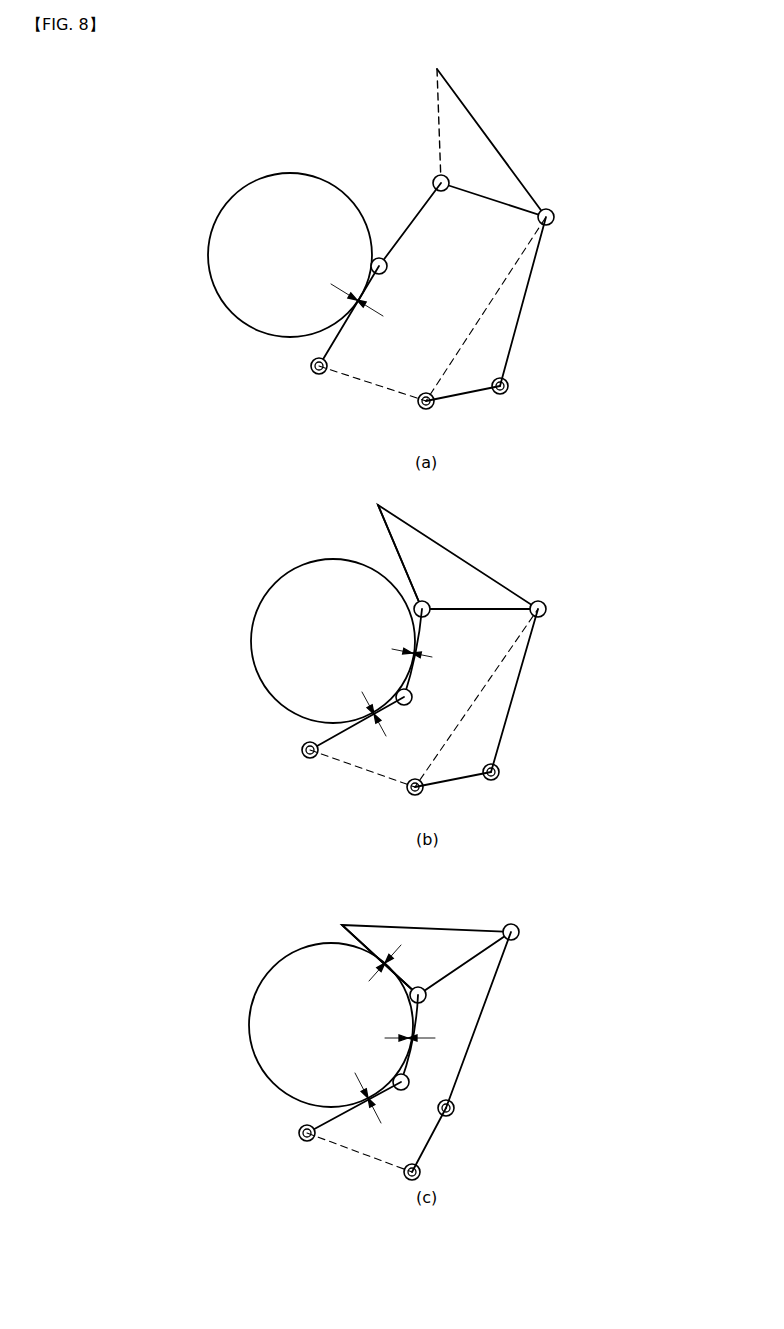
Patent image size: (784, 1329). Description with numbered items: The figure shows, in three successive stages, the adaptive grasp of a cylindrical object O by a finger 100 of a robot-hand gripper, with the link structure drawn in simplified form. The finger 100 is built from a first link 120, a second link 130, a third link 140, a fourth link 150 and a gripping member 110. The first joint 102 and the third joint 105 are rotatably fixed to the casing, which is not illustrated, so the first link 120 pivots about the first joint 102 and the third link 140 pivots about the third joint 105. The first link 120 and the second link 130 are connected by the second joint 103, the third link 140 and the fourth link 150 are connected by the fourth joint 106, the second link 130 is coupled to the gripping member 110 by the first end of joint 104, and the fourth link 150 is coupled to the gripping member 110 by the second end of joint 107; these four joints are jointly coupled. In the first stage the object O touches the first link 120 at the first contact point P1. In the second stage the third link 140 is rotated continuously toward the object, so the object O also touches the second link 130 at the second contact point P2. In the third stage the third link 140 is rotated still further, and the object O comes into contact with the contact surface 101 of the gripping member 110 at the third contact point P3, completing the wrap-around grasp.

The finger 100 is at (611, 99).
The contact surface 101 is at (438, 128).
The first joint 102 is at (310, 366).
The second joint 103 is at (388, 266).
The first end of joint 104 is at (436, 176).
The third joint 105 is at (426, 410).
The fourth joint 106 is at (509, 386).
The second end of joint 107 is at (555, 217).
The gripping member 110 is at (476, 158).
The first link 120 is at (345, 330).
The second link 130 is at (425, 222).
The third link 140 is at (475, 397).
The fourth link 150 is at (537, 280).
The cylindrical object O is at (290, 173).
The first contact point P1 is at (357, 300).
The second contact point P2 is at (412, 653).
The third contact point P3 is at (385, 963).